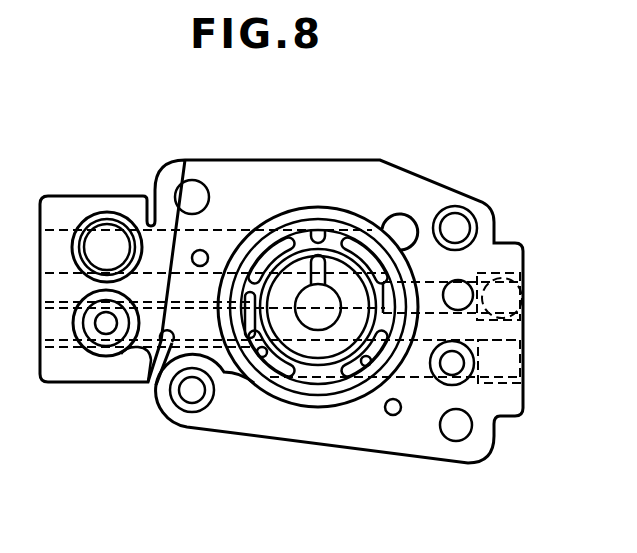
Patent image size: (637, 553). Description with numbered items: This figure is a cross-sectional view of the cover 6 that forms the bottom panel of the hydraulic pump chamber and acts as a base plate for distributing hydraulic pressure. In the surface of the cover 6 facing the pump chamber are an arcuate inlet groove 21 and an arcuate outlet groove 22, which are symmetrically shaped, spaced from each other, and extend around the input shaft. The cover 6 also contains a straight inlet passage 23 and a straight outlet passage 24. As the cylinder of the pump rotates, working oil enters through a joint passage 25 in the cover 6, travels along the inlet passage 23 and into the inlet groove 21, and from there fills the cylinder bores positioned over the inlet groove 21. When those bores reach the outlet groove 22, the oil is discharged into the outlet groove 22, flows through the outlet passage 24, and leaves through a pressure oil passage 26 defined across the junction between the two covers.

The cover 6 is at (407, 167).
The inlet groove 21 is at (352, 405).
The outlet groove 22 is at (243, 380).
The inlet passage 23 is at (319, 232).
The outlet passage 24 is at (161, 346).
The joint passage 25 is at (108, 242).
The pressure oil passage 26 is at (106, 332).